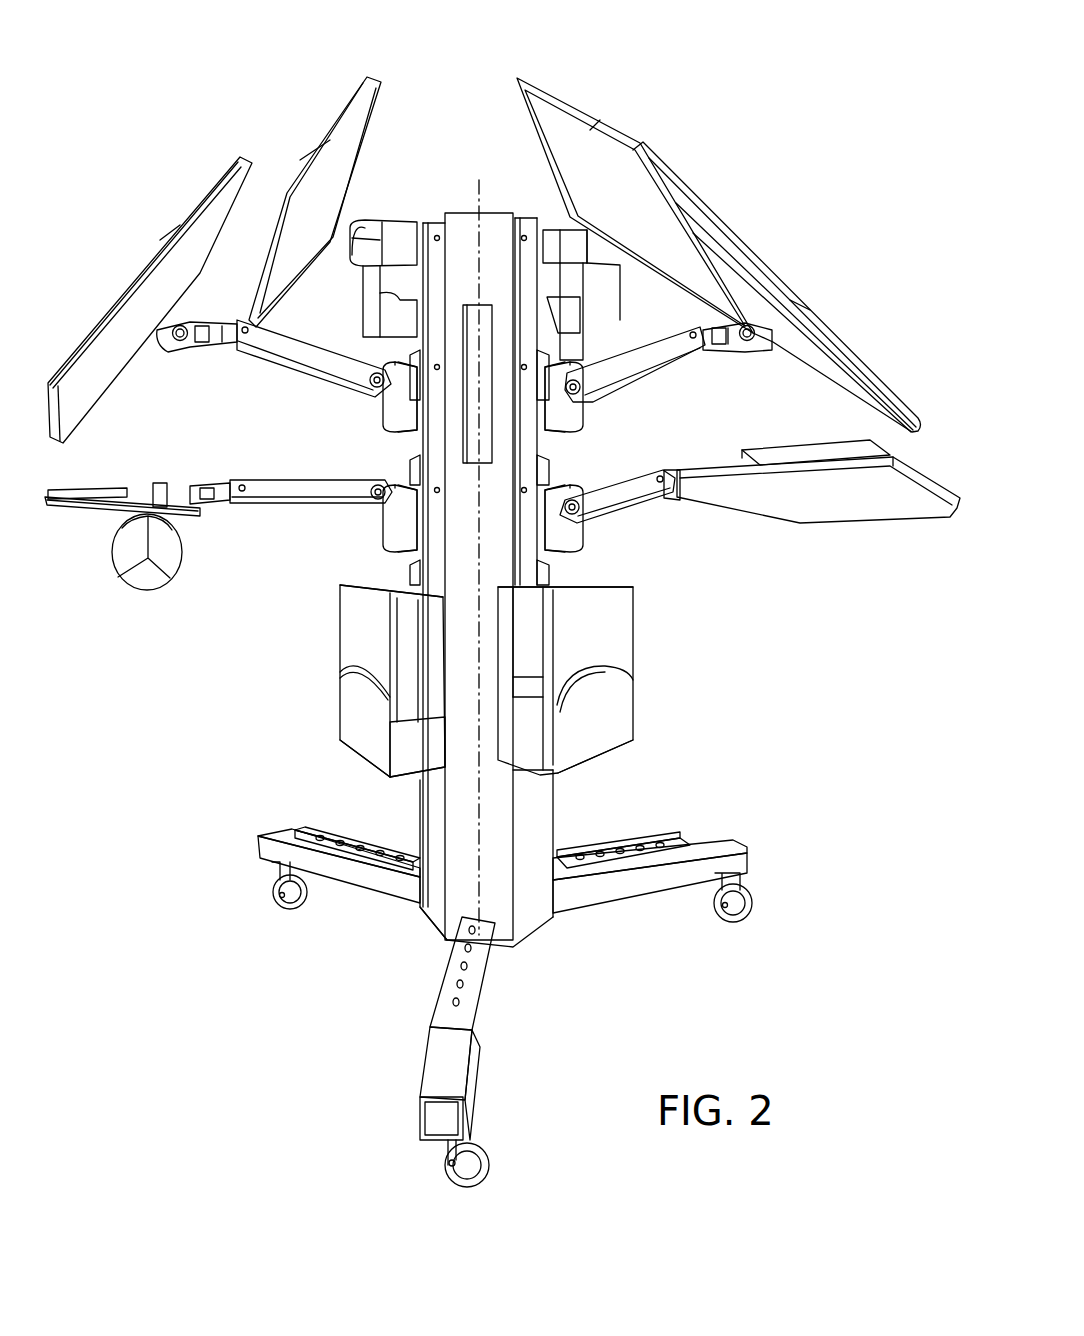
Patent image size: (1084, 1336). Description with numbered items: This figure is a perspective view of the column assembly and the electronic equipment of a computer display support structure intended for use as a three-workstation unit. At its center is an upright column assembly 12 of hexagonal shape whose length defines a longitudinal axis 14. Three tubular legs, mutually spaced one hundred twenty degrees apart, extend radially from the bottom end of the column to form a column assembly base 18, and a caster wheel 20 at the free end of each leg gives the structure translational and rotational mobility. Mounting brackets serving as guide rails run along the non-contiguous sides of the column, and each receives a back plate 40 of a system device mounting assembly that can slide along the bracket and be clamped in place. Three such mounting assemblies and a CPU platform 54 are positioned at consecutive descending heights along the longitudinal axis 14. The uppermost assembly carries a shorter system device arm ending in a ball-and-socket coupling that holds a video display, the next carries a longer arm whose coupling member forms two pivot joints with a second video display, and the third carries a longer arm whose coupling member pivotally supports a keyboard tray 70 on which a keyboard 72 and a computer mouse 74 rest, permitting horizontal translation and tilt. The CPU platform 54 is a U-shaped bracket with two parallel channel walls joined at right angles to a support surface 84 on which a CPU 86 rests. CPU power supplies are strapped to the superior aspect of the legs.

The upright column assembly 12 is at (492, 277).
The longitudinal axis 14 is at (445, 910).
The column assembly base 18 is at (620, 938).
The caster wheel 20 is at (272, 893).
The back plate 40 is at (548, 225).
The CPU platform 54 is at (330, 712).
The keyboard tray 70 is at (90, 505).
The keyboard 72 is at (102, 490).
The computer mouse 74 is at (120, 565).
The support surface 84 is at (405, 785).
The CPU 86 is at (348, 625).